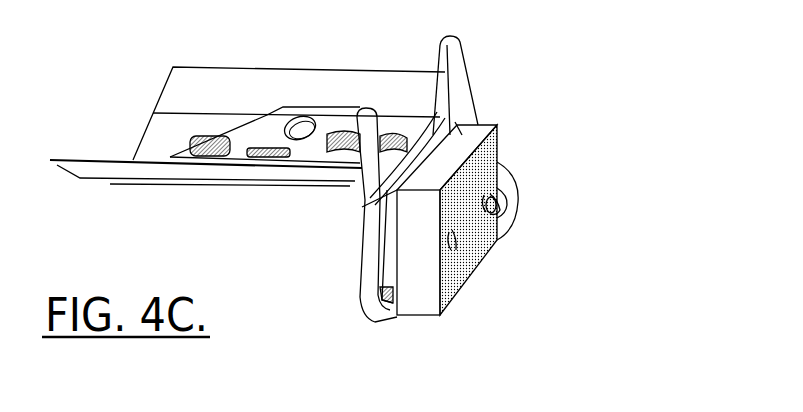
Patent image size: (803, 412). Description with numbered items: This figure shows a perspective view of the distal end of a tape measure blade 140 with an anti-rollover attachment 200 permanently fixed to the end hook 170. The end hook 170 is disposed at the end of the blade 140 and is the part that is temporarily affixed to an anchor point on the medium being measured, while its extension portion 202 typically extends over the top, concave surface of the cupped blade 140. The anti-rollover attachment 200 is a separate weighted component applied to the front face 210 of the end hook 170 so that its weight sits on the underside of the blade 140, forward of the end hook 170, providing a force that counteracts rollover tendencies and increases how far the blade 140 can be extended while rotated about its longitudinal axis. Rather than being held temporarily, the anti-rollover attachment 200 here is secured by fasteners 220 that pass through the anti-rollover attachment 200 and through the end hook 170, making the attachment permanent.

The blade 140 is at (158, 132).
The extension portion 202 is at (258, 130).
The end hook 170 is at (377, 233).
The anti-rollover attachment 200 is at (463, 277).
The front face 210 is at (508, 188).
The fasteners 220 is at (495, 207).